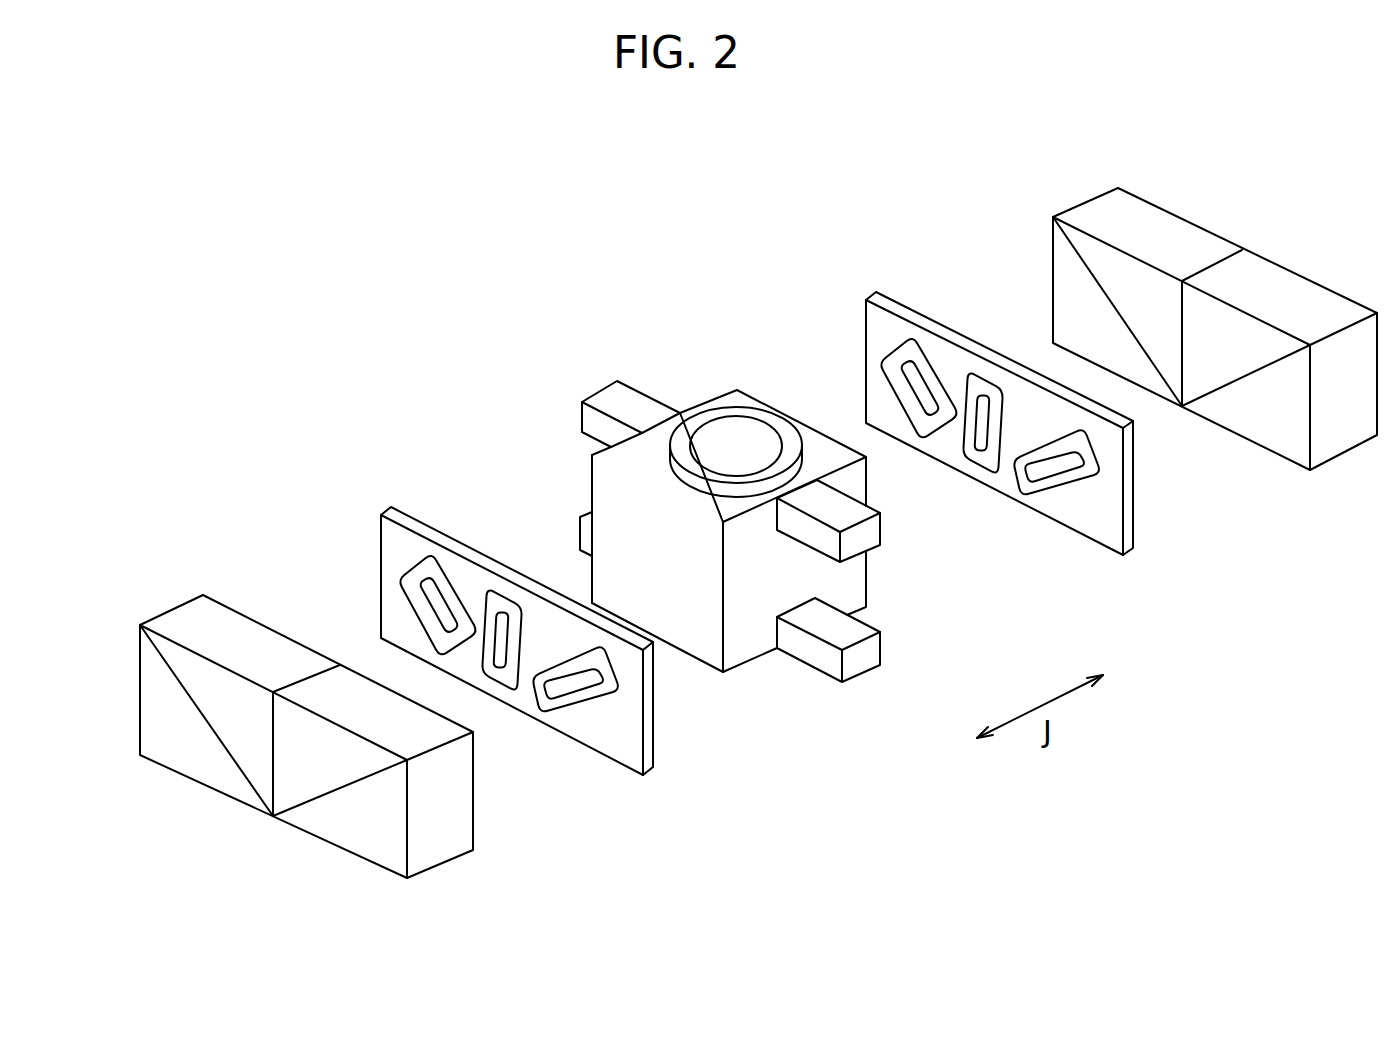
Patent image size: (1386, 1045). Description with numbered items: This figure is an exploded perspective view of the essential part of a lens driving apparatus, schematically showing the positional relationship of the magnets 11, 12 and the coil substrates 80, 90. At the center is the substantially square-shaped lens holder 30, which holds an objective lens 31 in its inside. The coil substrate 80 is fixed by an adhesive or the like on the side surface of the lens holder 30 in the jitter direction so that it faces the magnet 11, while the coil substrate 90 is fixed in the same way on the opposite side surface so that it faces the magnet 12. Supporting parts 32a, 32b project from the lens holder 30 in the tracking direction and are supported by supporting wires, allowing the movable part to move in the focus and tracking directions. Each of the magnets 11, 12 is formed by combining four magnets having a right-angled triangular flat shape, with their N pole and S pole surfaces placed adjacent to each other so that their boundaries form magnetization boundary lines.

The magnet 11 is at (1377, 437).
The magnet 12 is at (473, 850).
The lens holder 30 is at (750, 662).
The objective lens 31 is at (740, 447).
The supporting part 32a is at (594, 396).
The supporting part 32b is at (583, 513).
The coil substrate 80 is at (1133, 548).
The coil substrate 90 is at (653, 767).